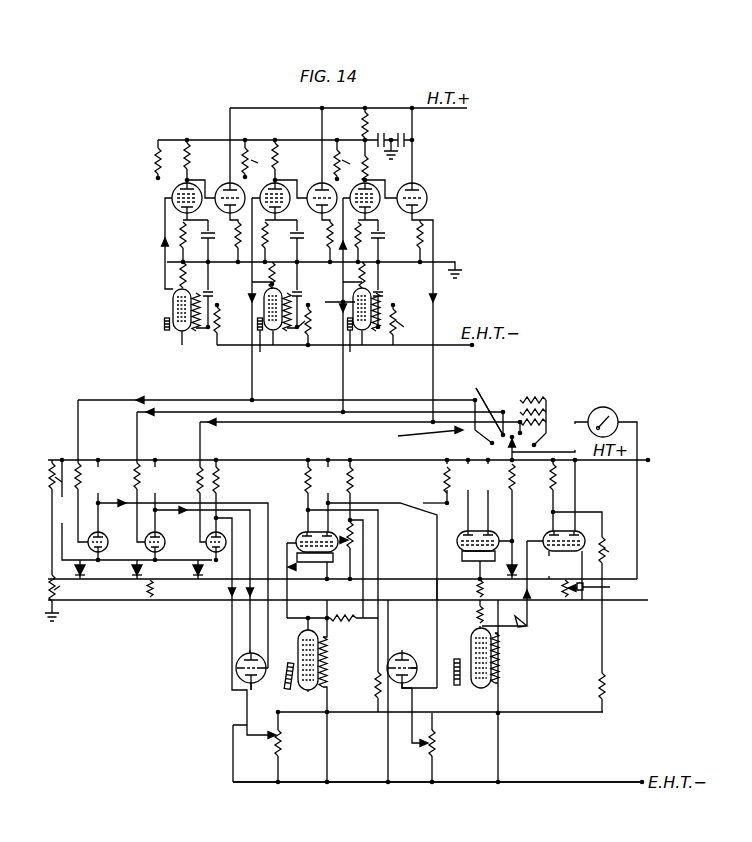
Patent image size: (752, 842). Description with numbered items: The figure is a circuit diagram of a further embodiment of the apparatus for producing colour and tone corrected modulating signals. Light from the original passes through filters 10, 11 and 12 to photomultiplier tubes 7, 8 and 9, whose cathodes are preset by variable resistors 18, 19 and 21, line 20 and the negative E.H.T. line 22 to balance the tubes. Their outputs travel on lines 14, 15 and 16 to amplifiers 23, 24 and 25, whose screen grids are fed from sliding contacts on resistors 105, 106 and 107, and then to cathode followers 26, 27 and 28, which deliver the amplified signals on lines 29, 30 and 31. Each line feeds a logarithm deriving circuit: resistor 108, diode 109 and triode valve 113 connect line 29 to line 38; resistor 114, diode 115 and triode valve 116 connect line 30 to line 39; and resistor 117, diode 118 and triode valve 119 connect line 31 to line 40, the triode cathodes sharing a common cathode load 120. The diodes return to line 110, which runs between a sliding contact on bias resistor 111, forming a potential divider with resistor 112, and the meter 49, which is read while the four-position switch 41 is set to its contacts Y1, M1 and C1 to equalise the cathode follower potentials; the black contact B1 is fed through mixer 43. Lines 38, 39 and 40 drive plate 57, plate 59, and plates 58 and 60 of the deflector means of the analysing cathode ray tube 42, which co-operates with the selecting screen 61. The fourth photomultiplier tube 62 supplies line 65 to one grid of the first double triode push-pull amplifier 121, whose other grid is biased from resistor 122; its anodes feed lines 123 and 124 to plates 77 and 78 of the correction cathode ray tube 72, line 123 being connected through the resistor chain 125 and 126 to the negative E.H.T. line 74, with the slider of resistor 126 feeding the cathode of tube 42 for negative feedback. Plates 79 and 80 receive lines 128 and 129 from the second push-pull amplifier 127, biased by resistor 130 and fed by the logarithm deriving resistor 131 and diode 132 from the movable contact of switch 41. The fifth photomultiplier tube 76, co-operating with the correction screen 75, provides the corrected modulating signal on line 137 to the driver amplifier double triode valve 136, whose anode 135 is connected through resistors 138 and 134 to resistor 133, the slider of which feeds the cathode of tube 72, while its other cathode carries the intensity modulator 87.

The photomultiplier tube 7 is at (172, 297).
The photomultiplier tube 8 is at (262, 298).
The photomultiplier tube 9 is at (341, 302).
The filter 10 is at (164, 327).
The filter 11 is at (265, 345).
The filter 12 is at (354, 344).
The line 14 is at (164, 262).
The line 15 is at (251, 277).
The line 16 is at (342, 277).
The variable resistor 18 is at (221, 322).
The variable resistor 19 is at (315, 324).
The line 20 is at (372, 336).
The variable resistor 21 is at (407, 324).
The line 22 is at (454, 342).
The amplifier 23 is at (198, 214).
The amplifier 24 is at (290, 214).
The amplifier 25 is at (372, 214).
The cathode follower 26 is at (224, 184).
The cathode follower 27 is at (318, 184).
The cathode follower 28 is at (425, 190).
The line 29 is at (175, 398).
The line 30 is at (292, 410).
The line 31 is at (372, 420).
The line 38 is at (280, 623).
The line 39 is at (248, 618).
The line 40 is at (232, 627).
The four-position switch 41 is at (420, 437).
The analysing cathode ray tube 42 is at (243, 697).
The mixer 43 is at (548, 411).
The meter 49 is at (609, 411).
The plate 57 is at (237, 667).
The plate 58 is at (233, 676).
The plate 59 is at (250, 655).
The plate 60 is at (277, 684).
The selecting screen 61 is at (288, 665).
The fourth photomultiplier tube 62 is at (309, 692).
The line 65 is at (298, 580).
The correction cathode ray tube 72 is at (391, 711).
The line 74 is at (553, 780).
The correction screen 75 is at (457, 686).
The fifth photomultiplier tube 76 is at (484, 689).
The plate 77 is at (399, 654).
The plate 78 is at (418, 668).
The plate 79 is at (405, 652).
The plate 80 is at (412, 689).
The intensity modulator 87 is at (597, 591).
The resistor 105 is at (151, 160).
The resistor 106 is at (247, 150).
The resistor 107 is at (338, 150).
The resistor 108 is at (82, 470).
The diode 109 is at (348, 592).
The line 110 is at (635, 545).
The bias resistor 111 is at (60, 587).
The resistor 112 is at (55, 468).
The amplifier triode valve 113 is at (99, 531).
The resistor 114 is at (140, 468).
The diode 115 is at (136, 568).
The triode valve 116 is at (163, 526).
The resistor 117 is at (197, 475).
The diode 118 is at (185, 583).
The triode valve 119 is at (233, 480).
The common cathode load 120 is at (150, 603).
The first double triode push-pull amplifier 121 is at (300, 539).
The resistor 122 is at (363, 506).
The line 123 is at (313, 508).
The line 124 is at (398, 584).
The resistor 125 is at (376, 689).
The resistor 126 is at (295, 747).
The second double triode push-pull amplifier 127 is at (490, 529).
The line 128 is at (429, 493).
The line 129 is at (435, 553).
The resistor 130 is at (455, 591).
The resistor 131 is at (528, 519).
The diode 132 is at (499, 589).
The resistor 133 is at (437, 745).
The resistor 134 is at (606, 683).
The anode 135 is at (556, 511).
The driver amplifier double triode valve 136 is at (553, 533).
The line 137 is at (521, 625).
The resistor 138 is at (604, 535).
The fixed contact M1 is at (488, 403).
The fixed contact C1 is at (514, 427).
The fixed contact Y1 is at (488, 446).
The fixed contact B1 is at (548, 443).